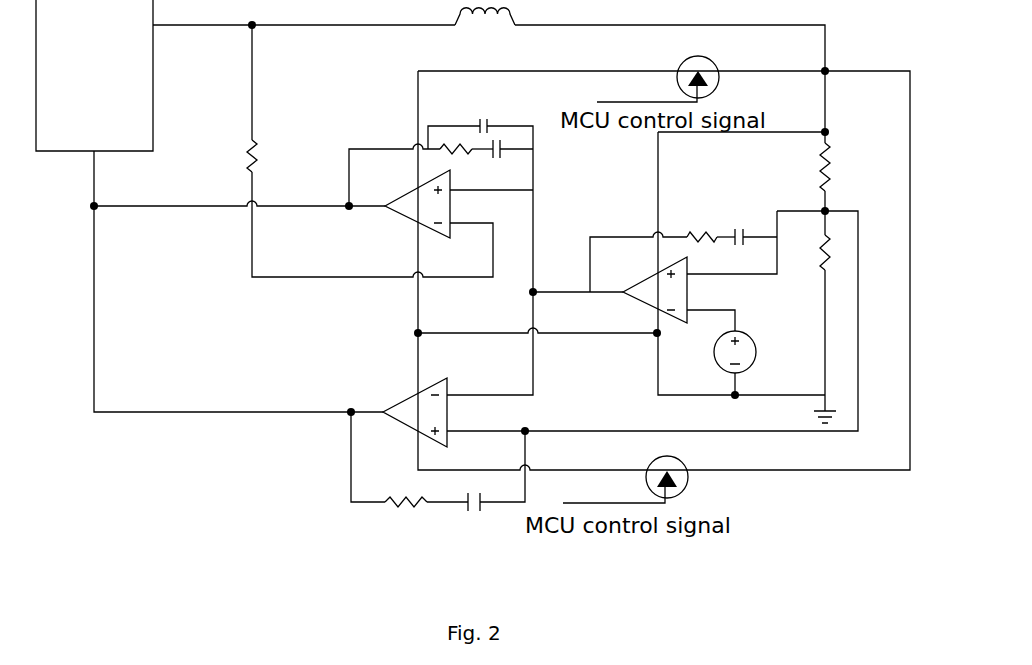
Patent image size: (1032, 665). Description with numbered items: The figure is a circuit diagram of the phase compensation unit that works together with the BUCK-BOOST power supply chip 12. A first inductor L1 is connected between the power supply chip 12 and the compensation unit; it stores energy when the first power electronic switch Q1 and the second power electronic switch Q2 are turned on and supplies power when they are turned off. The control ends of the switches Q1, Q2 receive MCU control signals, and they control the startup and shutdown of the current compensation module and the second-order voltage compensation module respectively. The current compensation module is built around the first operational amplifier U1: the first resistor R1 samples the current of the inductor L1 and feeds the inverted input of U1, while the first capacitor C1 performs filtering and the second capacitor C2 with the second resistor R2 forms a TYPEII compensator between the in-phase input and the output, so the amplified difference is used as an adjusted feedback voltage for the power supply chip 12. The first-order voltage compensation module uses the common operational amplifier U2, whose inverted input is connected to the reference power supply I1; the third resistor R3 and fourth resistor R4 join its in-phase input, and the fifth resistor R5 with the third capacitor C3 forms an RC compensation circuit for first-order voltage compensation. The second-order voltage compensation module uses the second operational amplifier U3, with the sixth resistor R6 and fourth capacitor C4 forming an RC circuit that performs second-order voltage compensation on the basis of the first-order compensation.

The BUCK-BOOST power supply chip 12 is at (94, 75).
The first inductor L1 is at (485, 32).
The first resistor R1 is at (232, 156).
The second resistor R2 is at (459, 165).
The third resistor R3 is at (806, 167).
The fourth resistor R4 is at (807, 252).
The fifth resistor R5 is at (702, 221).
The sixth resistor R6 is at (406, 518).
The first capacitor C1 is at (481, 117).
The second capacitor C2 is at (507, 163).
The third capacitor C3 is at (742, 223).
The fourth capacitor C4 is at (471, 514).
The first operational amplifier U1 is at (410, 212).
The common operational amplifier U2 is at (641, 291).
The second operational amplifier U3 is at (407, 420).
The first power electronic switch Q1 is at (682, 72).
The second power electronic switch Q2 is at (653, 472).
The reference power supply I1 is at (746, 352).